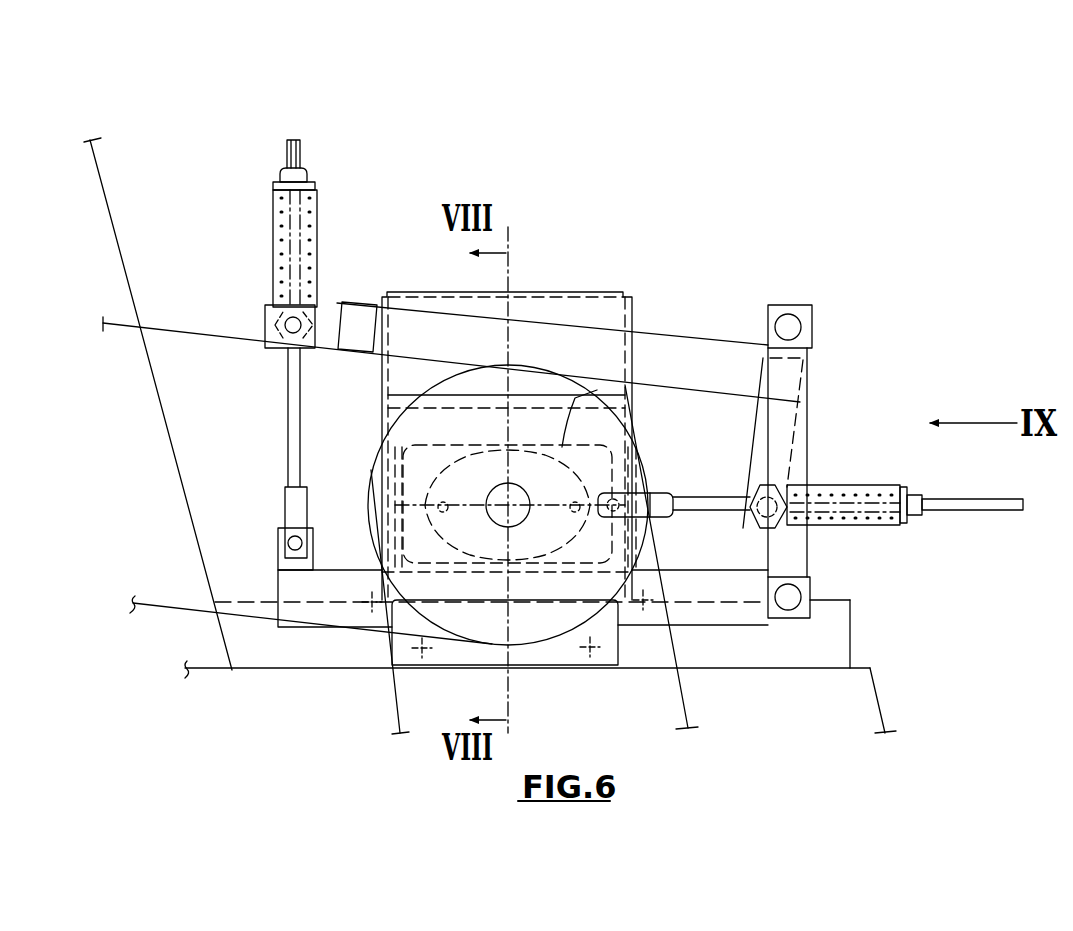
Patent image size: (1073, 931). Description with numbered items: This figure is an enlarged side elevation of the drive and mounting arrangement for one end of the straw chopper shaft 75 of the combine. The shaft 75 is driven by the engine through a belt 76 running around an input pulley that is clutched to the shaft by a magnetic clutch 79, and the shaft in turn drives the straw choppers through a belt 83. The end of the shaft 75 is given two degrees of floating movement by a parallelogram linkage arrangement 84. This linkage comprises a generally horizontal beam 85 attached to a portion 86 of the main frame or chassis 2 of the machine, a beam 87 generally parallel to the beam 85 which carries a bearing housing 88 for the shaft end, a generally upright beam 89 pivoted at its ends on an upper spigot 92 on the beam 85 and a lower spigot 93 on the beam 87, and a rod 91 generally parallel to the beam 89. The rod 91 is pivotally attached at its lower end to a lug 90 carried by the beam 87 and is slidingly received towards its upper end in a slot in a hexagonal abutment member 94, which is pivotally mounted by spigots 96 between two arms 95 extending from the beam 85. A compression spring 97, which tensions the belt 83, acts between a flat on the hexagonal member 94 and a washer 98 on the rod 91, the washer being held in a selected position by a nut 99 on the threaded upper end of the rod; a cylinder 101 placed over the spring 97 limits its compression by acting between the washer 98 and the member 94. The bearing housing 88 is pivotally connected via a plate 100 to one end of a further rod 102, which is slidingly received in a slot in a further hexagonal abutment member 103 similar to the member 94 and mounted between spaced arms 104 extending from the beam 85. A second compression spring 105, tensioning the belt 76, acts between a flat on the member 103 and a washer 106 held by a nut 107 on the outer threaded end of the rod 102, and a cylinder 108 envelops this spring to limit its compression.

The main frame 2 is at (537, 295).
The shaft 75 is at (522, 512).
The belt 76 is at (167, 330).
The magnetic clutch 79 is at (373, 483).
The belt 83 is at (683, 700).
The parallelogram linkage arrangement 84 is at (600, 247).
The horizontal beam 85 is at (702, 352).
The portion of the main frame 86 is at (583, 317).
The beam 87 is at (745, 618).
The bearing housing 88 is at (573, 485).
The upright beam 89 is at (808, 465).
The lug 90 is at (283, 567).
The rod 91 is at (295, 452).
The upper spigot 92 is at (801, 330).
The lower spigot 93 is at (798, 593).
The hexagonal abutment member 94 is at (268, 321).
The arms 95 is at (329, 312).
The spigots 96 is at (290, 333).
The compression spring 97 is at (307, 207).
The washer 98 is at (317, 188).
The nut 99 is at (305, 173).
The plate 100 is at (597, 390).
The cylinder 101 is at (317, 252).
The further rod 102 is at (720, 507).
The further hexagonal abutment member 103 is at (748, 528).
The arm 104 is at (757, 458).
The compression spring 105 is at (882, 493).
The washer 106 is at (905, 523).
The nut 107 is at (917, 513).
The cylinder 108 is at (848, 523).